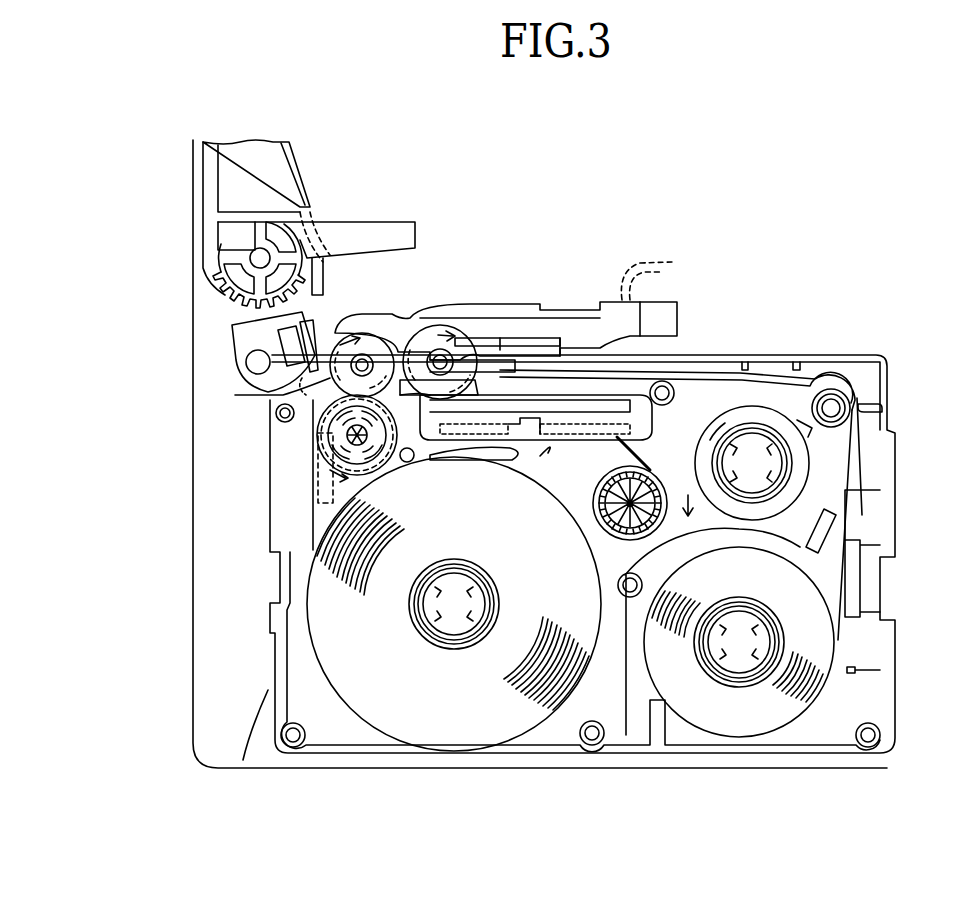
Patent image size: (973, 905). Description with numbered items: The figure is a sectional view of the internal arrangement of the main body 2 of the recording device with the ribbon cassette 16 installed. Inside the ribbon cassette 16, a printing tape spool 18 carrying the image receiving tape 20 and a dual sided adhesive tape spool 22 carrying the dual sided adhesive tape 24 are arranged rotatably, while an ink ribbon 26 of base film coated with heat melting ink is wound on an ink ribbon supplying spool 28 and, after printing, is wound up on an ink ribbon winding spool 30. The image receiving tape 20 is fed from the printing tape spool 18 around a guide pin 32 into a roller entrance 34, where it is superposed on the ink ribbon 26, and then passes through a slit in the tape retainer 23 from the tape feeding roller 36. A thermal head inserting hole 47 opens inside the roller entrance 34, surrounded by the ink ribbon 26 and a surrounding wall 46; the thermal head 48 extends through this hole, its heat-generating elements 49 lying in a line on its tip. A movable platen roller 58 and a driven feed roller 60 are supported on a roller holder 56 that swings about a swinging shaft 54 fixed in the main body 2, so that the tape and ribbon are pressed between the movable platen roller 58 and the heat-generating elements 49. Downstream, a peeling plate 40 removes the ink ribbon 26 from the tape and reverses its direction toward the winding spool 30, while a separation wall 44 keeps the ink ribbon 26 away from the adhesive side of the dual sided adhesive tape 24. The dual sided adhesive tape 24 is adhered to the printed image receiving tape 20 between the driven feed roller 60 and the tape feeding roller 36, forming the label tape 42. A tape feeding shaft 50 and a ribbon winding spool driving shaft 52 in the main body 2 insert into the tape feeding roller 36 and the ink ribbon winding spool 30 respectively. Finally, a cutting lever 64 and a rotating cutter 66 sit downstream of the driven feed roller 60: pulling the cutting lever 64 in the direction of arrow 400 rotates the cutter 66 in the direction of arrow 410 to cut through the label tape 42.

The arrow 400 is at (158, 135).
The main body 2 is at (191, 381).
The cutting lever 64 is at (297, 166).
The rotating cutter 66 is at (240, 333).
The arrow 410 is at (290, 366).
The label tape 42 is at (280, 400).
The tape retainer 23 is at (276, 412).
The tape feeding roller 36 is at (328, 466).
The tape feeding shaft 50 is at (345, 436).
The driven feed roller 60 is at (376, 338).
The movable platen roller 58 is at (446, 343).
The peeling plate 40 is at (468, 370).
The roller entrance 34 is at (418, 390).
The roller holder 56 is at (528, 310).
The swinging shaft 54 is at (656, 264).
The thermal head inserting hole 47 is at (603, 330).
The heat-generating elements 49 is at (518, 418).
The thermal head 48 is at (610, 396).
The surrounding wall 46 is at (678, 402).
The image receiving tape 20 is at (403, 368).
The ink ribbon 26 is at (810, 390).
The guide pin 32 is at (858, 401).
The ink ribbon supplying spool 28 is at (798, 448).
The ink ribbon winding spool 30 is at (643, 492).
The dual sided adhesive tape 24 is at (483, 728).
The dual sided adhesive tape spool 22 is at (446, 646).
The separation wall 44 is at (461, 455).
The printing tape spool 18 is at (763, 688).
The ribbon winding spool driving shaft 52 is at (614, 518).
The ribbon cassette 16 is at (262, 703).